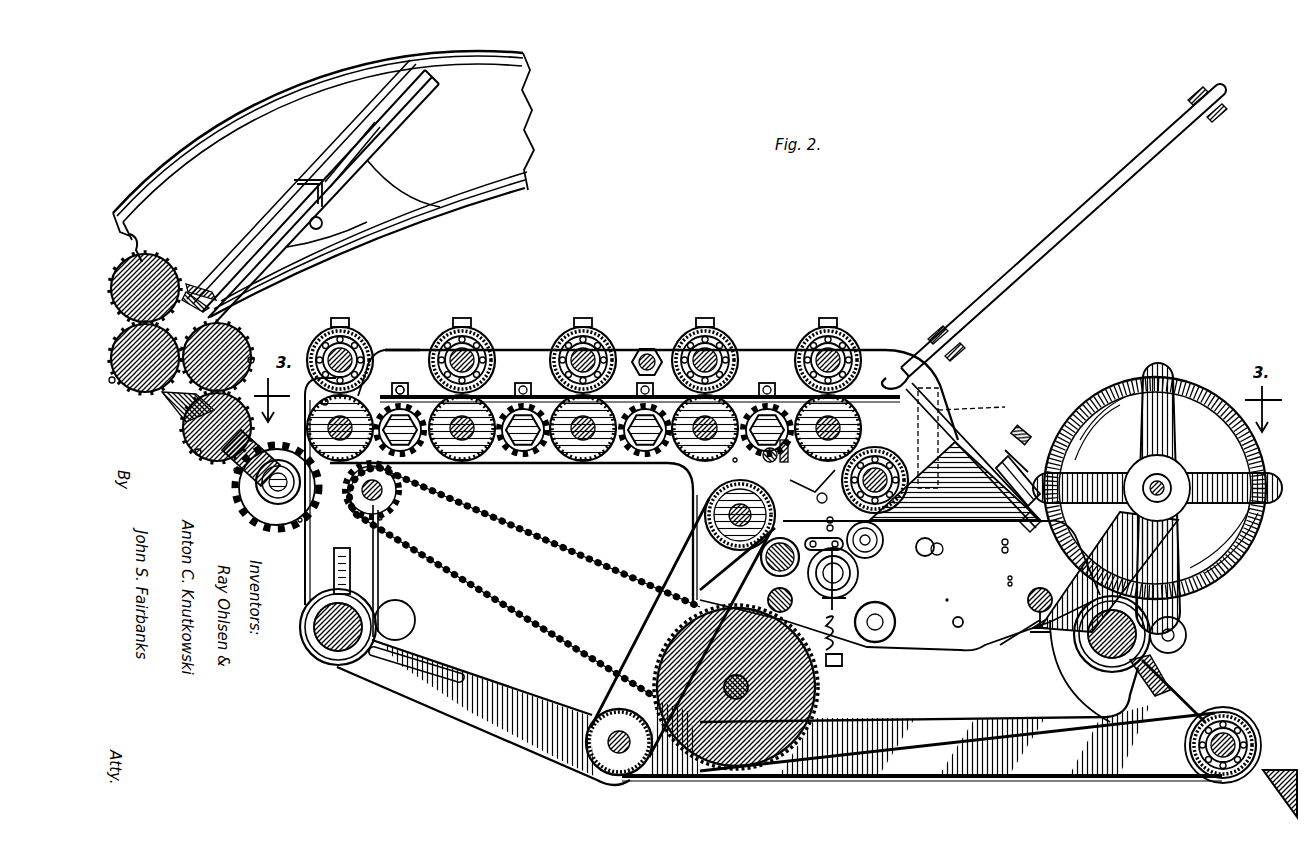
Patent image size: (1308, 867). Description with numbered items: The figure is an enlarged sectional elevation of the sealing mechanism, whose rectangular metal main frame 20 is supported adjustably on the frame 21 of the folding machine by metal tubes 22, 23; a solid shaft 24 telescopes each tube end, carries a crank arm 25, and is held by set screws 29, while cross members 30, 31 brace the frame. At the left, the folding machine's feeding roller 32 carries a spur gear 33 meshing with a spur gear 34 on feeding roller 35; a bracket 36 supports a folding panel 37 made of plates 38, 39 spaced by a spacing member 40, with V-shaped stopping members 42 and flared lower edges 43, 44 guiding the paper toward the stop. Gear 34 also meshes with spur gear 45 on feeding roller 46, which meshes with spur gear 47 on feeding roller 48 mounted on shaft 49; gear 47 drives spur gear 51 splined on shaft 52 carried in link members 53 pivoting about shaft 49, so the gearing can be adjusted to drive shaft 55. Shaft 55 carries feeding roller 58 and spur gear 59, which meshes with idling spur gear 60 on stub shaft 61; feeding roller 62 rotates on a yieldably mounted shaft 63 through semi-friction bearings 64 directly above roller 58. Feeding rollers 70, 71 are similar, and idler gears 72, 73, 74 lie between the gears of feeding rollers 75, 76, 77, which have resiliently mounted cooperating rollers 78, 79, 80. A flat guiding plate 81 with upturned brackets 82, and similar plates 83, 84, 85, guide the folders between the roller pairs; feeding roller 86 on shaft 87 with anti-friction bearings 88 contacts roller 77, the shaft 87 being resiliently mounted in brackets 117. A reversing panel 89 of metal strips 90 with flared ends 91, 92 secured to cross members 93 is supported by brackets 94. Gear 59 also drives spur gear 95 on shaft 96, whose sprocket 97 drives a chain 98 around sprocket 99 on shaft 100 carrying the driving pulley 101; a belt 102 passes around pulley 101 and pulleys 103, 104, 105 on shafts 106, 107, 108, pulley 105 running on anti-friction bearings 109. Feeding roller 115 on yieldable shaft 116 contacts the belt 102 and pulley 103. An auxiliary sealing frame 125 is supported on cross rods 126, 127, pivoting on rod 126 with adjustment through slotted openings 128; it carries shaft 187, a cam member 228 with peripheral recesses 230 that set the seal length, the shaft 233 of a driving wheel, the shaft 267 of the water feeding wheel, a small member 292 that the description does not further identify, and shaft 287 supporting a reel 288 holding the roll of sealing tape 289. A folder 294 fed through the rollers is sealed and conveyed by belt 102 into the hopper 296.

The main frame 20 is at (900, 721).
The folding machine frame 21 is at (323, 145).
The metal tube 22 is at (302, 620).
The metal tube 23 is at (1152, 645).
The solid shaft 24 is at (345, 650).
The crank arm 25 is at (400, 598).
The set screw 29 is at (1150, 634).
The cross member 30 is at (647, 349).
The cross member 31 is at (762, 456).
The feeding roller 32 is at (128, 258).
The spur gear 33 is at (150, 255).
The spur gear 34 is at (128, 392).
The feeding roller 35 is at (113, 384).
The bracket 36 is at (368, 244).
The folding panel 37 is at (290, 110).
The plate 38 is at (335, 168).
The plate 39 is at (420, 206).
The spacing member 40 is at (420, 100).
The V-shaped stopping member 42 is at (294, 181).
The flared lower edge 43 is at (192, 282).
The flared lower edge 44 is at (230, 312).
The spur gear 45 is at (256, 356).
The feeding roller 46 is at (248, 335).
The spur gear 47 is at (195, 452).
The feeding roller 48 is at (183, 432).
The shaft 49 is at (232, 470).
The spur gear 51 is at (270, 528).
The shaft 52 is at (238, 470).
The link member 53 is at (256, 486).
The shaft 55 is at (322, 404).
The feeding roller 58 is at (305, 432).
The spur gear 59 is at (300, 523).
The idling spur gear 60 is at (386, 350).
The stub shaft 61 is at (425, 465).
The feeding roller 62 is at (360, 330).
The yieldably mounted shaft 63 is at (358, 350).
The semi-friction bearing 64 is at (340, 318).
The feeding roller 70 is at (480, 470).
The feeding roller 71 is at (476, 330).
The idler gear 72 is at (523, 460).
The idler gear 73 is at (642, 460).
The idler gear 74 is at (733, 462).
The feeding roller 75 is at (585, 466).
The feeding roller 76 is at (690, 466).
The feeding roller 77 is at (855, 414).
The cooperating roller 78 is at (600, 330).
The cooperating roller 79 is at (722, 331).
The cooperating roller 80 is at (846, 331).
The flat guiding plate 81 is at (415, 388).
The upturned bracket 82 is at (391, 380).
The guiding plate 83 is at (515, 385).
The guiding plate 84 is at (655, 386).
The guiding plate 85 is at (766, 379).
The feeding roller 86 is at (886, 460).
The shaft 87 is at (905, 458).
The anti-friction bearing 88 is at (898, 482).
The reversing panel 89 is at (1021, 249).
The metal strip 90 is at (1065, 245).
The flared end 91 is at (940, 400).
The flared end 92 is at (903, 370).
The cross member 93 is at (940, 334).
The bracket 94 is at (966, 438).
The spur gear 95 is at (350, 552).
The shaft 96 is at (384, 518).
The sprocket 97 is at (395, 498).
The chain 98 is at (540, 545).
The sprocket 99 is at (660, 650).
The shaft 100 is at (748, 686).
The driving pulley 101 is at (810, 706).
The belt 102 is at (900, 745).
The pulley 103 is at (728, 522).
The pulley 104 is at (585, 742).
The pulley 105 is at (1248, 730).
The shaft 106 is at (705, 512).
The shaft 107 is at (610, 760).
The shaft 108 is at (1206, 778).
The anti-friction bearing 109 is at (1230, 714).
The feeding roller 115 is at (760, 545).
The shaft 116 is at (764, 568).
The bracket 117 is at (790, 480).
The auxiliary sealing frame 125 is at (946, 586).
The cross rod 126 is at (768, 600).
The cross rod 127 is at (1020, 636).
The slotted opening 128 is at (1038, 614).
The shaft 187 is at (877, 632).
The cam member 228 is at (852, 588).
The recess 230 is at (855, 573).
The shaft 233 is at (880, 537).
The shaft 267 is at (936, 545).
The shaft 287 is at (1170, 475).
The reel 288 is at (1165, 372).
The roll of sealing tape 289 is at (1128, 365).
The pin 292 is at (961, 618).
The folder 294 is at (508, 395).
The hopper 296 is at (1285, 787).